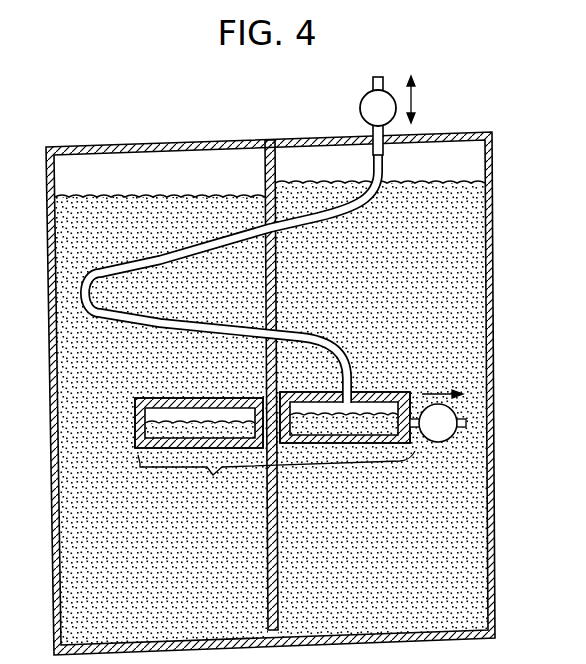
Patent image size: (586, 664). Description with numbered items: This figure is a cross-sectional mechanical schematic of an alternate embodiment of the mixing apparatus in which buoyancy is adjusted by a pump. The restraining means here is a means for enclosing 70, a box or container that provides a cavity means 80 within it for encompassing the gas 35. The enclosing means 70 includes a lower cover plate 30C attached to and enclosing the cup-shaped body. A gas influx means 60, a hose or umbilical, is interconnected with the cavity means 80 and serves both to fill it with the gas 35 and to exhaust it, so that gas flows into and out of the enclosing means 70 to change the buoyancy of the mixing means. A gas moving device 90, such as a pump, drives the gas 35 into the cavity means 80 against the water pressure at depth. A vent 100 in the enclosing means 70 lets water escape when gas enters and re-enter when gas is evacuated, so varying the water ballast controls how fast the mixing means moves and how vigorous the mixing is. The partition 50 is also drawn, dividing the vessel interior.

The gas moving device 90 is at (358, 105).
The gas influx means 60 is at (309, 330).
The gas 35 is at (157, 414).
The lower cover plate 30C is at (276, 480).
The enclosing means 70 is at (180, 448).
The cavity means 80 is at (382, 408).
The vent 100 is at (440, 444).
The partition wall 50 is at (277, 556).